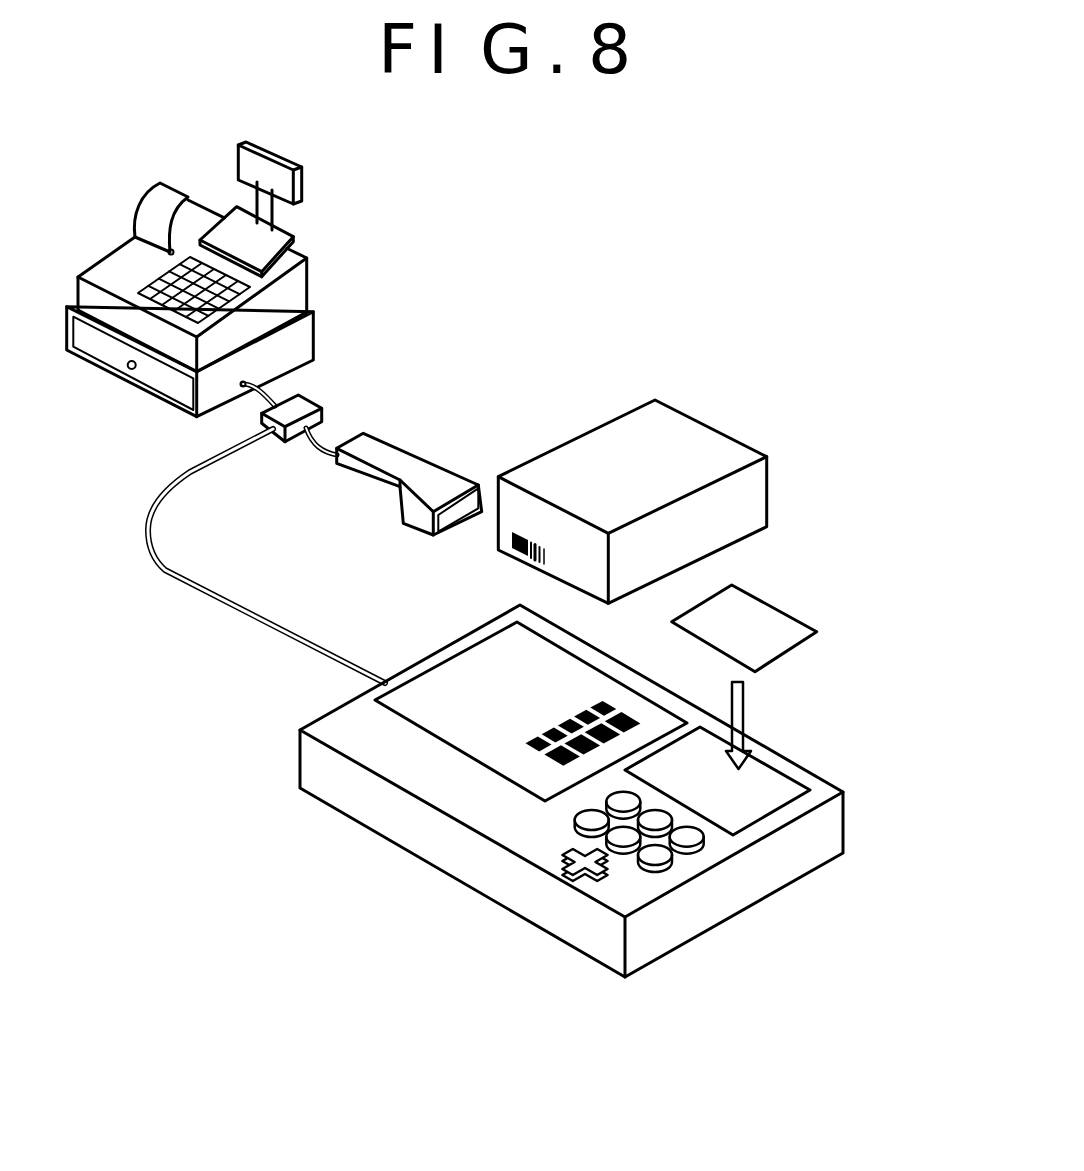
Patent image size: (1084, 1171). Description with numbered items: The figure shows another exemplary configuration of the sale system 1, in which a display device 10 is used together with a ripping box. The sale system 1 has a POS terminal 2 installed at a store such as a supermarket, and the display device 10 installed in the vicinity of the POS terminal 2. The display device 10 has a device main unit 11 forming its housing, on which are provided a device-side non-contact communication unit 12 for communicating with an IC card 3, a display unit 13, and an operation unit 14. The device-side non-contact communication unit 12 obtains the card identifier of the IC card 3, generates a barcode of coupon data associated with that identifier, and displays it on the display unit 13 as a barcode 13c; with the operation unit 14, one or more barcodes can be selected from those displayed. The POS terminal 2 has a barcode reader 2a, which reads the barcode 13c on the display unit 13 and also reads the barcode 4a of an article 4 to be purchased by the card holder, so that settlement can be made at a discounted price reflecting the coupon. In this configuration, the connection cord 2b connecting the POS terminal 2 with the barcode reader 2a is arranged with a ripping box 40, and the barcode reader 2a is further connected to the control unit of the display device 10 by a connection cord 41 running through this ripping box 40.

The sale system 1 is at (592, 318).
The POS terminal 2 is at (333, 230).
The barcode reader 2a is at (430, 480).
The connection cord 2b is at (330, 430).
The IC card 3 is at (782, 613).
The article 4 is at (690, 430).
The barcode 4a is at (503, 552).
The display device 10 is at (842, 772).
The device main unit 11 is at (823, 853).
The device-side non-contact communication unit 12 is at (777, 787).
The display unit 13 is at (453, 670).
The barcode 13c is at (628, 712).
The operation unit 14 is at (678, 862).
The ripping box 40 is at (297, 440).
The connection cord 41 is at (273, 627).